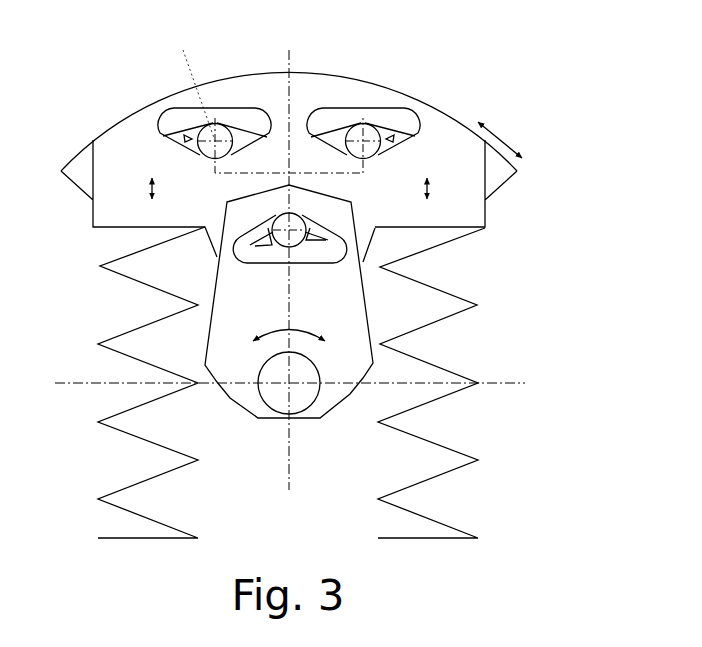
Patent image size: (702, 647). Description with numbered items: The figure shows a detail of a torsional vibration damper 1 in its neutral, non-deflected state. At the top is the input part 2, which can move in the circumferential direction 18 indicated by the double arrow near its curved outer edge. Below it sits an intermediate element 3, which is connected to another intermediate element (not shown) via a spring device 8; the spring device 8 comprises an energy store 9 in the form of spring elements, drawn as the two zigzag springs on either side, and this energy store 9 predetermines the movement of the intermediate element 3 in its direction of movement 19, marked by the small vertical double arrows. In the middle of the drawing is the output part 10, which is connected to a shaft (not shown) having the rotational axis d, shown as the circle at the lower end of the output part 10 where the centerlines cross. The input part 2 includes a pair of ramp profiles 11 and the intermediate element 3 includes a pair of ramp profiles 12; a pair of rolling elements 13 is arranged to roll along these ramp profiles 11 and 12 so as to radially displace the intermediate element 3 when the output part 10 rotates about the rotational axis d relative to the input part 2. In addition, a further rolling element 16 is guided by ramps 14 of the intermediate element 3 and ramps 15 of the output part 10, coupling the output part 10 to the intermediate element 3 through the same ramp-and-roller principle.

The torsional vibration damper 1 is at (467, 89).
The input part 2 is at (497, 178).
The intermediate element 3 is at (308, 92).
The spring device 8 is at (345, 392).
The energy store 9 is at (478, 461).
The output part 10 is at (355, 362).
The ramps 11 is at (190, 138).
The ramps 12 is at (257, 138).
The rolling elements 13 is at (222, 126).
The ramps 14 is at (275, 217).
The ramps 15 is at (330, 237).
The rolling element 16 is at (297, 245).
The circumferential direction 18 is at (503, 137).
The direction of movement 19 is at (147, 188).
The rotational axis d is at (289, 384).